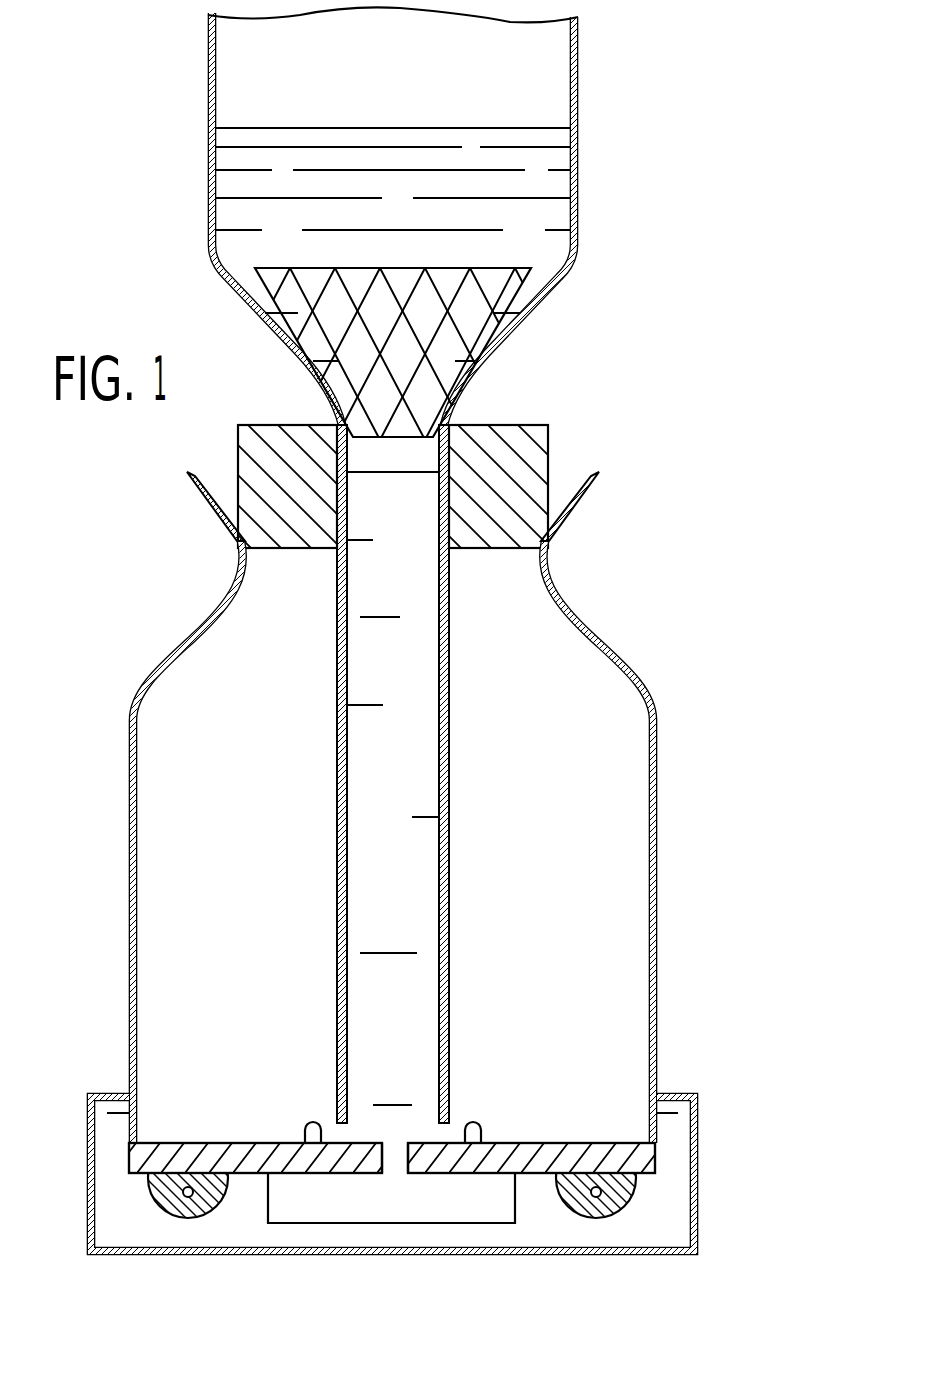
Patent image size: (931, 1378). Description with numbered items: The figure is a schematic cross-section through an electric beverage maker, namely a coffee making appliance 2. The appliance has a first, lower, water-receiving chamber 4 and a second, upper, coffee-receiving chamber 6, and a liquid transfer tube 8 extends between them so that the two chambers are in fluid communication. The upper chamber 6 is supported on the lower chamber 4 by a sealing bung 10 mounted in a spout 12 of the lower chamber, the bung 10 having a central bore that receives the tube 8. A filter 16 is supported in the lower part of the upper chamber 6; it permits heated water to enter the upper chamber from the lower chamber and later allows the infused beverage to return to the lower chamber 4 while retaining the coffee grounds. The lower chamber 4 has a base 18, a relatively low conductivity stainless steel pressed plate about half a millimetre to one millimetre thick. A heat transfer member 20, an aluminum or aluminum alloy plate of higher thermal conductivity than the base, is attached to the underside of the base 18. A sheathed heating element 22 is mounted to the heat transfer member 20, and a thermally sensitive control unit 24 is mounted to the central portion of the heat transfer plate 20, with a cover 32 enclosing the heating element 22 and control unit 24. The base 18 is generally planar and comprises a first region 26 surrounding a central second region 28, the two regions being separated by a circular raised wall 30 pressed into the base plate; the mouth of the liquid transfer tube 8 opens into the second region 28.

The coffee making appliance 2 is at (603, 297).
The lower water-receiving chamber 4 is at (657, 790).
The upper coffee-receiving chamber 6 is at (580, 78).
The liquid transfer tube 8 is at (449, 693).
The sealing bung 10 is at (548, 428).
The spout 12 is at (585, 498).
The filter 16 is at (456, 345).
The base 18 is at (657, 1162).
The heat transfer member 20 is at (129, 1163).
The sheathed heating element 22 is at (636, 1196).
The thermally sensitive control unit 24 is at (268, 1210).
The first region 26 is at (216, 1143).
The second region 28 is at (395, 1143).
The circular raised wall 30 is at (483, 1126).
The cover 32 is at (699, 1243).